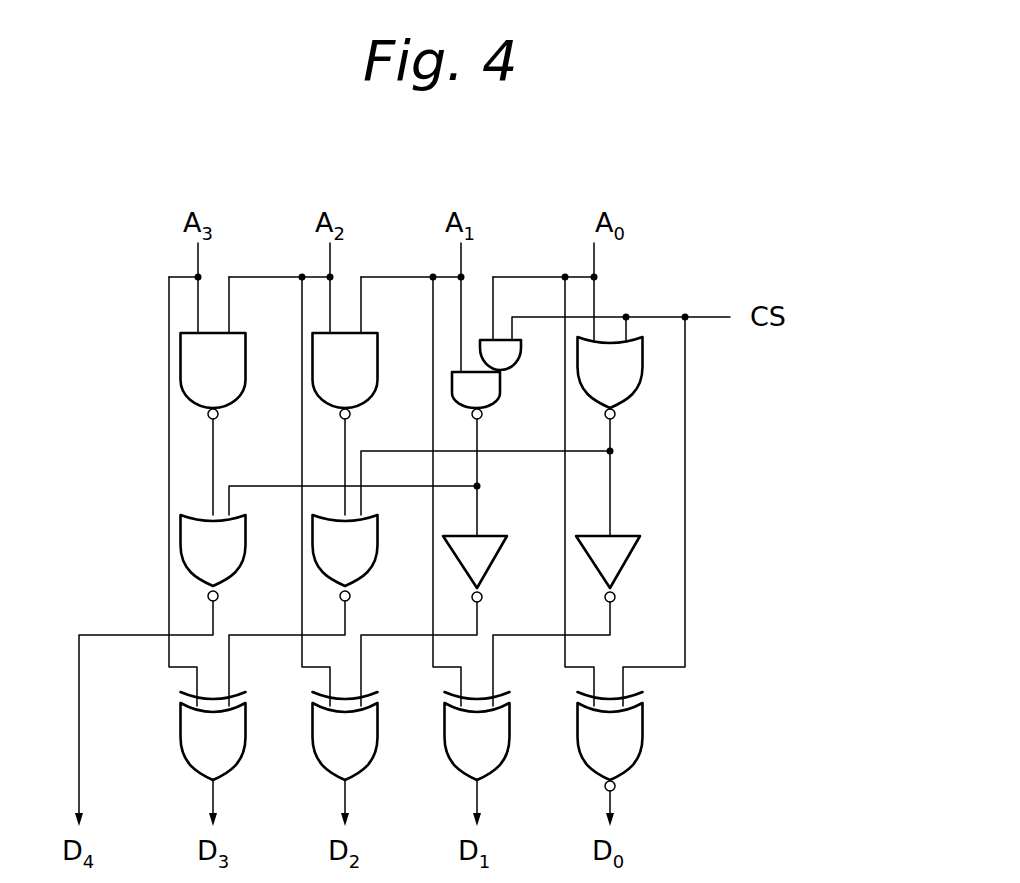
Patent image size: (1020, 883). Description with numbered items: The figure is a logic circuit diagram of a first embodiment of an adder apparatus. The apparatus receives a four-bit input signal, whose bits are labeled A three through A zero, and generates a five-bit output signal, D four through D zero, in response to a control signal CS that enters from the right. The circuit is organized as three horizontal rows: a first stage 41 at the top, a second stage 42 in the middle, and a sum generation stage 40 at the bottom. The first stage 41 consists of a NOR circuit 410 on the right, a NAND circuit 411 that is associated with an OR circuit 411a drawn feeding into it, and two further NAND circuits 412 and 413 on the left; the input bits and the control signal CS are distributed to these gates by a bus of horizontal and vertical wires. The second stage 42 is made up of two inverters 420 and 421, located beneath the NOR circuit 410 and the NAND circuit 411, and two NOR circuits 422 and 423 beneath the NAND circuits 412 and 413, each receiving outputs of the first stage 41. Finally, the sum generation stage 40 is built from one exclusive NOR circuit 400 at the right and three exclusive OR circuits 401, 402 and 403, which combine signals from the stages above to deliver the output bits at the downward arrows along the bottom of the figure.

The first stage 41 is at (722, 398).
The second stage 42 is at (722, 556).
The sum generation stage 40 is at (722, 746).
The NAND circuit 413 is at (245, 386).
The NAND circuit 412 is at (377, 386).
The NAND circuit 411 is at (500, 392).
The OR circuit 411a is at (528, 352).
The NOR circuit 410 is at (640, 388).
The NOR circuit 423 is at (243, 565).
The NOR circuit 422 is at (375, 565).
The inverter 421 is at (498, 557).
The inverter 420 is at (631, 557).
The exclusive OR circuit 403 is at (243, 752).
The exclusive OR circuit 402 is at (375, 752).
The exclusive OR circuit 401 is at (507, 752).
The exclusive NOR circuit 400 is at (640, 752).